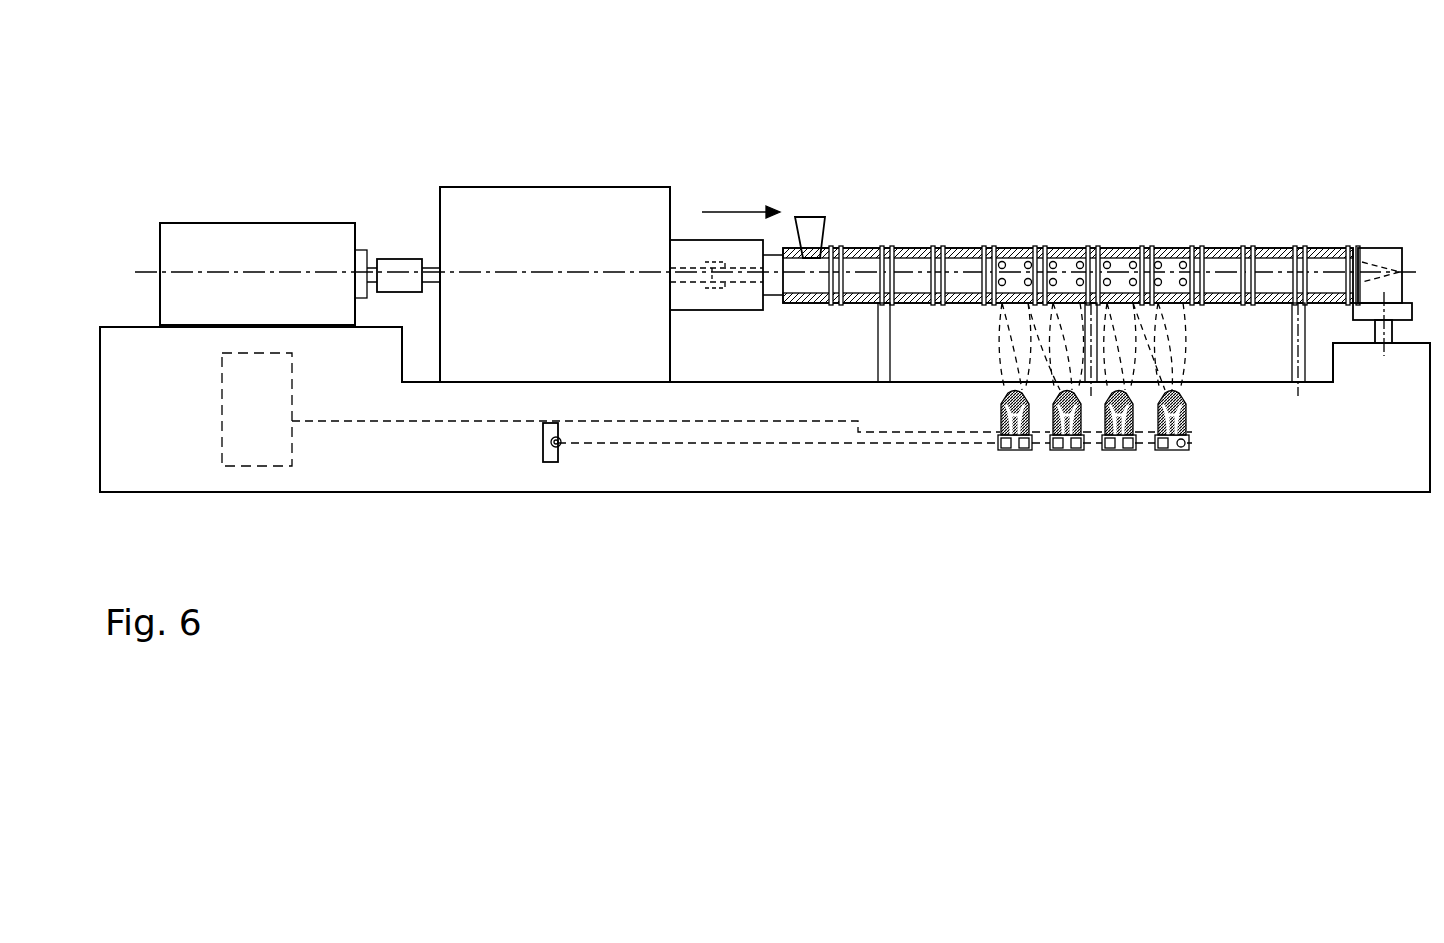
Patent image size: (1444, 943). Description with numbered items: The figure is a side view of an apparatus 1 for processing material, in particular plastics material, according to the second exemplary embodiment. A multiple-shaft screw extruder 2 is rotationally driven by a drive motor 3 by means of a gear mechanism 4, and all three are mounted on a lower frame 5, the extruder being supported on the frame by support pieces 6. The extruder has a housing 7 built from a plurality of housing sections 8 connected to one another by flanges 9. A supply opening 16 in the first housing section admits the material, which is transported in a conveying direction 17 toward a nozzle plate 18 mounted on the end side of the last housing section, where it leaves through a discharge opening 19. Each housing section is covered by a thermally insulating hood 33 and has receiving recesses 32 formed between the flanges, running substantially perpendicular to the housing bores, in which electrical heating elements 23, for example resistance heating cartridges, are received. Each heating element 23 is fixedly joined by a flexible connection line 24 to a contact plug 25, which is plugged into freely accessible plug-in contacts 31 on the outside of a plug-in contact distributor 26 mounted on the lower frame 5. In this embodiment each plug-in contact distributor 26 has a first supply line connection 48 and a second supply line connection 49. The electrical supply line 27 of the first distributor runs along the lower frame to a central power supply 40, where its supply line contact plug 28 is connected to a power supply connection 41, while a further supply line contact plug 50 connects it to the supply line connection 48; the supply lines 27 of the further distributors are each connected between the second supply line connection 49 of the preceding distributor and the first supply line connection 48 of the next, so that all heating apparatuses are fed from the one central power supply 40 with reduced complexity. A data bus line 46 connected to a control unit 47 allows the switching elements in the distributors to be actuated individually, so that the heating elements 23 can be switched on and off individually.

The apparatus 1 is at (775, 105).
The multiple-shaft screw extruder 2 is at (1071, 196).
The drive motor 3 is at (257, 235).
The gear mechanism 4 is at (557, 200).
The lower frame 5 is at (777, 482).
The support pieces 6 is at (885, 348).
The housing 7 is at (1021, 250).
The housing sections 8 is at (1117, 256).
The flanges 9 is at (987, 248).
The supply opening 16 is at (810, 262).
The conveying direction 17 is at (735, 210).
The nozzle plate 18 is at (1377, 255).
The discharge opening 19 is at (1414, 270).
The electrical heating element 23 is at (1128, 265).
The connection line 24 is at (1160, 362).
The contact plug 25 is at (1093, 443).
The plug-in contact distributor 26 is at (1030, 460).
The electrical supply line 27 is at (742, 448).
The supply line contact plug 28 is at (561, 443).
The plug-in contacts 31 is at (1150, 372).
The receiving recesses 32 is at (1184, 268).
The thermally insulating hoods 33 is at (1242, 238).
The central power supply 40 is at (543, 427).
The power supply connections 41 is at (550, 444).
The data bus line 46 is at (365, 424).
The control unit 47 is at (270, 458).
The first supply line connection 48 is at (1005, 450).
The second supply line connection 49 is at (1018, 452).
The further supply line contact plug 50 is at (1002, 448).